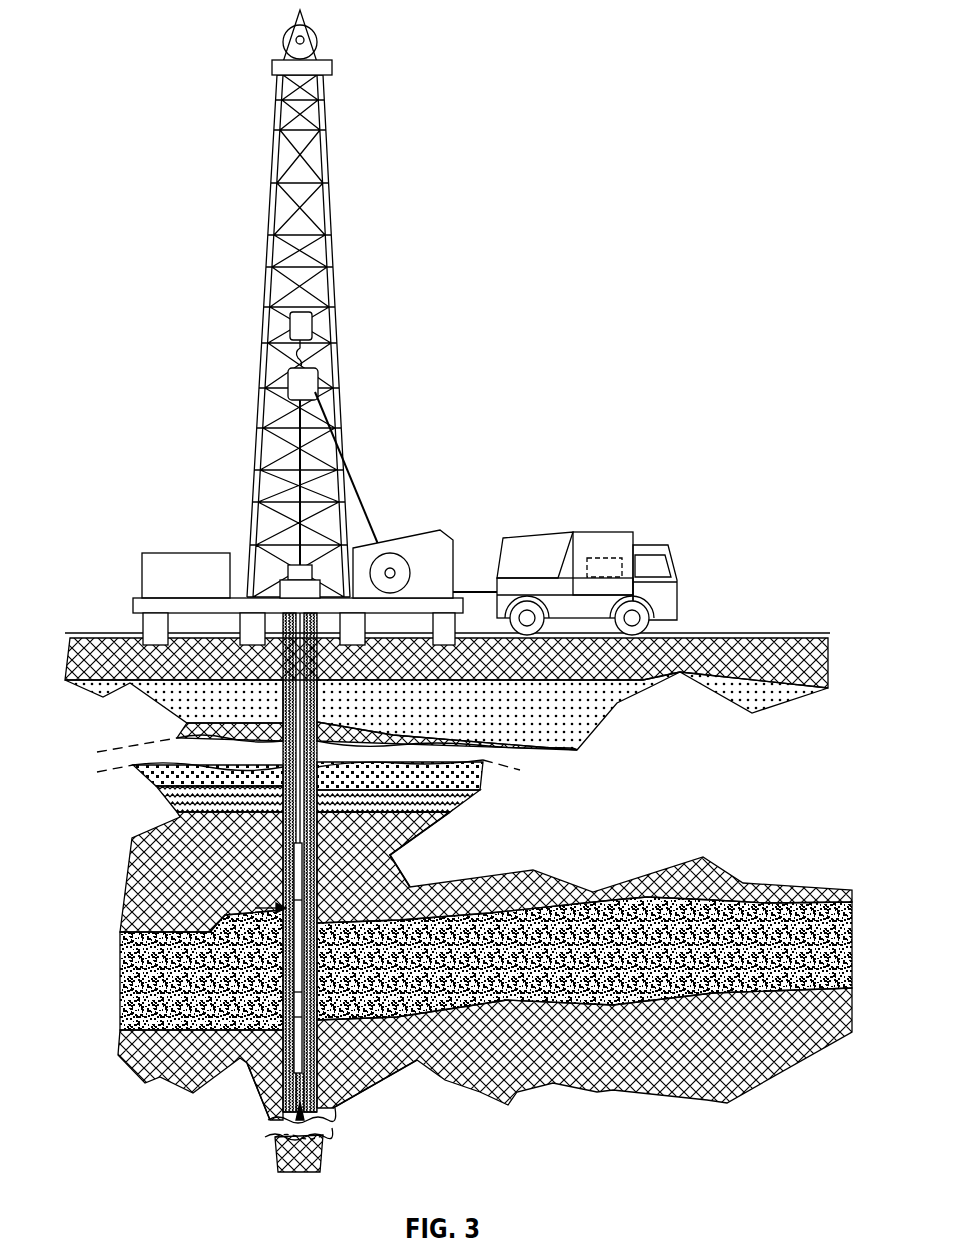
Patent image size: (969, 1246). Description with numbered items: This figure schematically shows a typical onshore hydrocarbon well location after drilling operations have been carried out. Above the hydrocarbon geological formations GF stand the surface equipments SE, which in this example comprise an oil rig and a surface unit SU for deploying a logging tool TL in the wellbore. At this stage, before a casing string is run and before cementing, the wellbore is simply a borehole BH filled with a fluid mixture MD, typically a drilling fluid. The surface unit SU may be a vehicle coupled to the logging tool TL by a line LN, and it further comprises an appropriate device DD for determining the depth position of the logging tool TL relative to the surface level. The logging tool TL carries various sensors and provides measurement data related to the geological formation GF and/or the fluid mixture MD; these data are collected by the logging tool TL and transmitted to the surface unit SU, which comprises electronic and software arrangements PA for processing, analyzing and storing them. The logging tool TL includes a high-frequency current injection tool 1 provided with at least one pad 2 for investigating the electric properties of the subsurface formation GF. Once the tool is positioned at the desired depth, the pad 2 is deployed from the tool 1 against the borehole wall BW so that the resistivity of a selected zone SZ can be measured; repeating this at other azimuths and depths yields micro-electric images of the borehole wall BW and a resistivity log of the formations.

The surface equipments SE is at (512, 237).
The depth determining device DD is at (392, 534).
The surface unit SU is at (611, 536).
The electronic and software arrangements PA is at (617, 565).
The hydrocarbon geological formation GF is at (438, 887).
The line LN is at (455, 810).
The borehole wall BW is at (388, 855).
The logging tool TL is at (120, 972).
The high-frequency current injection tool 1 is at (294, 1057).
The fluid mixture MD is at (257, 1063).
The borehole BH is at (306, 1122).
The selected zone SZ is at (400, 1005).
The pad 2 is at (363, 1077).